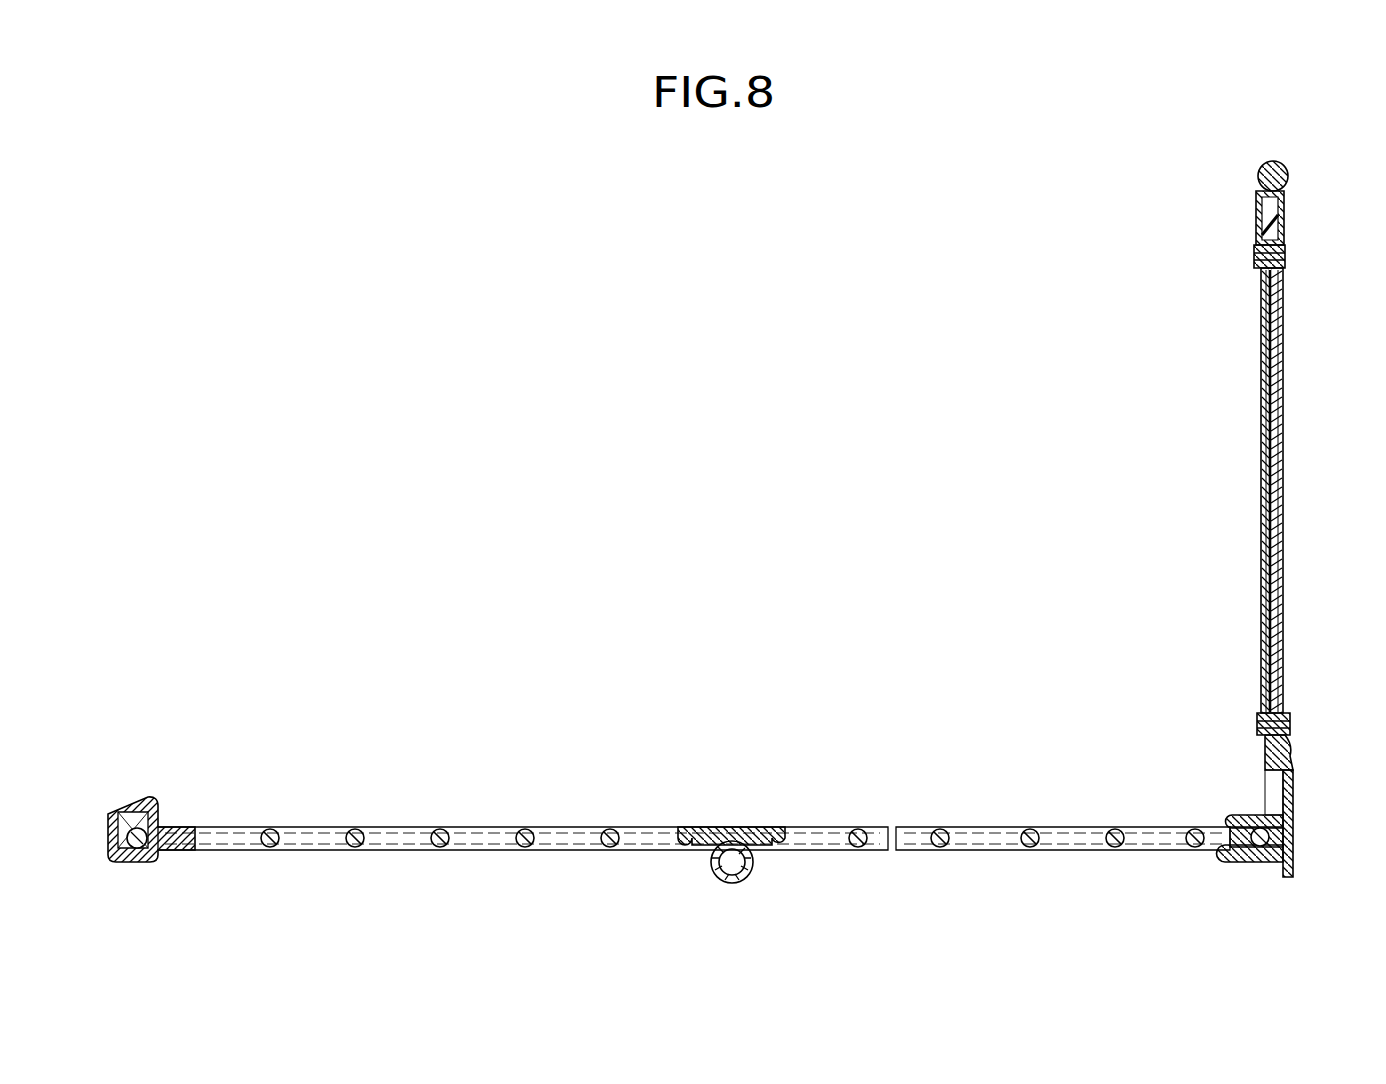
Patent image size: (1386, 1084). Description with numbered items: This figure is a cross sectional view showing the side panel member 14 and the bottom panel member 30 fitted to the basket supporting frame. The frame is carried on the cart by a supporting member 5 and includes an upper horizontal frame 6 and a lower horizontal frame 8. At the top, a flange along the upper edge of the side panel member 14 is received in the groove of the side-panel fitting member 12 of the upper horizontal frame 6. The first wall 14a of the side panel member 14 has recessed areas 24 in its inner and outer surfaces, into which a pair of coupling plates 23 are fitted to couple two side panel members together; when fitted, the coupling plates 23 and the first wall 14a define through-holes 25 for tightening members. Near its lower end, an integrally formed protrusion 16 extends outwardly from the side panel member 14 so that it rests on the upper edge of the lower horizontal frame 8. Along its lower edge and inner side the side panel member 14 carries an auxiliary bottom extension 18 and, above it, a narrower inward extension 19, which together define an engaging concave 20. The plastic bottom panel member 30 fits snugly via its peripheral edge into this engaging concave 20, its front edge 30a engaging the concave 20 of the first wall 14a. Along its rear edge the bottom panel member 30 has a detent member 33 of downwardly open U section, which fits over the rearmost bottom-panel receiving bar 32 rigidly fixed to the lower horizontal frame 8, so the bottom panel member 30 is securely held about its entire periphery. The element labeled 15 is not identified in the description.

The supporting member 5 is at (748, 878).
The upper horizontal frame 6 is at (1276, 177).
The lower horizontal frame 8 is at (1293, 812).
The side-panel fitting member 12 is at (1285, 205).
The side panel member 14 is at (1305, 744).
The first wall 14a is at (1276, 352).
The insert 15 is at (1280, 216).
The protrusion 16 is at (1292, 757).
The auxiliary bottom extension 18 is at (1230, 858).
The inward extension 19 is at (1248, 815).
The engaging concave 20 is at (1261, 846).
The coupling plate 23 is at (1263, 432).
The recessed area 24 is at (1278, 510).
The through-hole 25 is at (1257, 253).
The bottom panel member 30 is at (621, 858).
The front edge 30a is at (1228, 830).
The bottom-panel receiving bar 32 is at (136, 852).
The detent member 33 is at (143, 834).